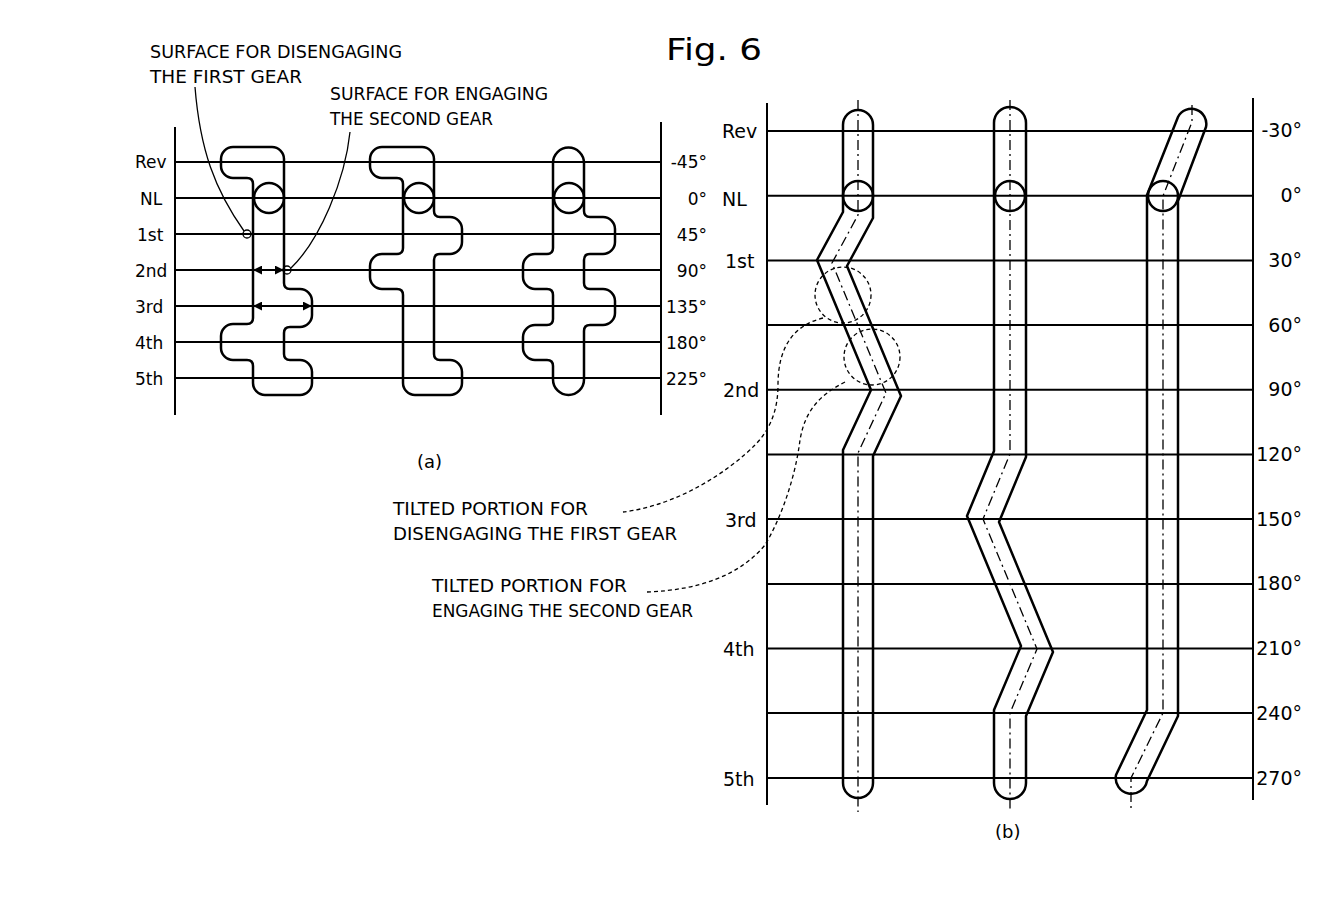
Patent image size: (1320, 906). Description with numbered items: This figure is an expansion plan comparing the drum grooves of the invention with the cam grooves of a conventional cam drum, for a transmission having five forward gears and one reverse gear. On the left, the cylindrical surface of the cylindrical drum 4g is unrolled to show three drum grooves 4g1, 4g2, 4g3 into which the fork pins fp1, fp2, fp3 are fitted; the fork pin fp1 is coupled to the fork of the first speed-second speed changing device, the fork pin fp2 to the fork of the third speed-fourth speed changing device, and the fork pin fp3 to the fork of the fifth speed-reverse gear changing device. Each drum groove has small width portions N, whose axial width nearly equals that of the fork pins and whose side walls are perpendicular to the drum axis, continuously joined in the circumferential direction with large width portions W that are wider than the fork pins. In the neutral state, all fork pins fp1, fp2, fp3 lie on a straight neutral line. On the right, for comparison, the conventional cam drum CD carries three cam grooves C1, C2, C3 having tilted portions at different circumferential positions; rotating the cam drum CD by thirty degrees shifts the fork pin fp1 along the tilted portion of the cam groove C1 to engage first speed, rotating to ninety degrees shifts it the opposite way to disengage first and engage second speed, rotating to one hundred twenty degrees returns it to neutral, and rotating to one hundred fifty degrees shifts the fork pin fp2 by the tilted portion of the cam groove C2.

The cylindrical drum 4g is at (413, 319).
The drum groove 4g1 is at (279, 401).
The drum groove 4g2 is at (428, 401).
The drum groove 4g3 is at (572, 401).
The fork pin fp1 is at (275, 192).
The fork pin fp2 is at (425, 192).
The fork pin fp3 is at (575, 192).
The small width portion N is at (267, 277).
The large width portion W is at (290, 313).
The cam groove C1 is at (874, 562).
The cam groove C2 is at (1025, 567).
The cam groove C3 is at (1179, 560).
The cam drum CD is at (1019, 471).